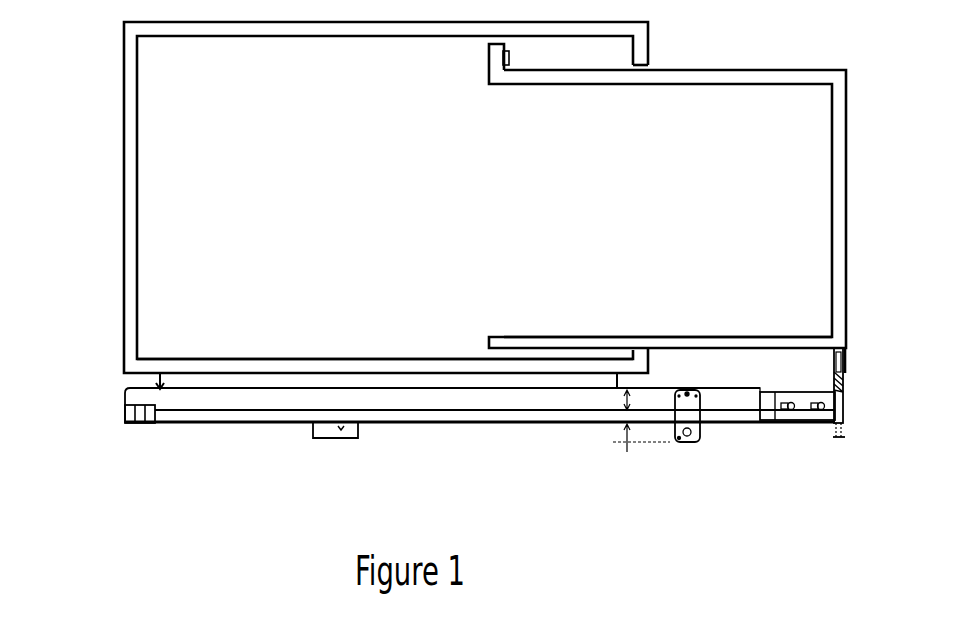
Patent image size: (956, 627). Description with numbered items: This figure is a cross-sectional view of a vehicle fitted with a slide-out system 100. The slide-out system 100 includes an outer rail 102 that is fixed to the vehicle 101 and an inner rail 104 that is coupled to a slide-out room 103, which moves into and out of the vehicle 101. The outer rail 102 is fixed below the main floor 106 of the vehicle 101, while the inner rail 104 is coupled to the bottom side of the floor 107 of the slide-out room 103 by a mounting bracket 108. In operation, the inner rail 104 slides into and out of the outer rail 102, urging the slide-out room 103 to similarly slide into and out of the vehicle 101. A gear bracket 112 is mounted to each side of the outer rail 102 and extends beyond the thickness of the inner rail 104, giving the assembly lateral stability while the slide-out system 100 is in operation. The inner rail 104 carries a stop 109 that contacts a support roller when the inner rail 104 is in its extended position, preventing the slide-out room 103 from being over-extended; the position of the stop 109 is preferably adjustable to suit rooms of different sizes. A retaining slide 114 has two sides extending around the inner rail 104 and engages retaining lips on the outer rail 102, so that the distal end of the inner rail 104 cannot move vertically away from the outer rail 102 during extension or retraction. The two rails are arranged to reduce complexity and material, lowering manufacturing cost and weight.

The slide-out system 100 is at (322, 460).
The vehicle 101 is at (292, 168).
The outer rail 102 is at (163, 398).
The slide-out room 103 is at (760, 212).
The inner rail 104 is at (760, 418).
The main floor 106 is at (205, 358).
The floor 107 is at (728, 337).
The mounting bracket 108 is at (843, 403).
The stop 109 is at (350, 439).
The gear bracket 112 is at (683, 443).
The retaining slide 114 is at (150, 425).